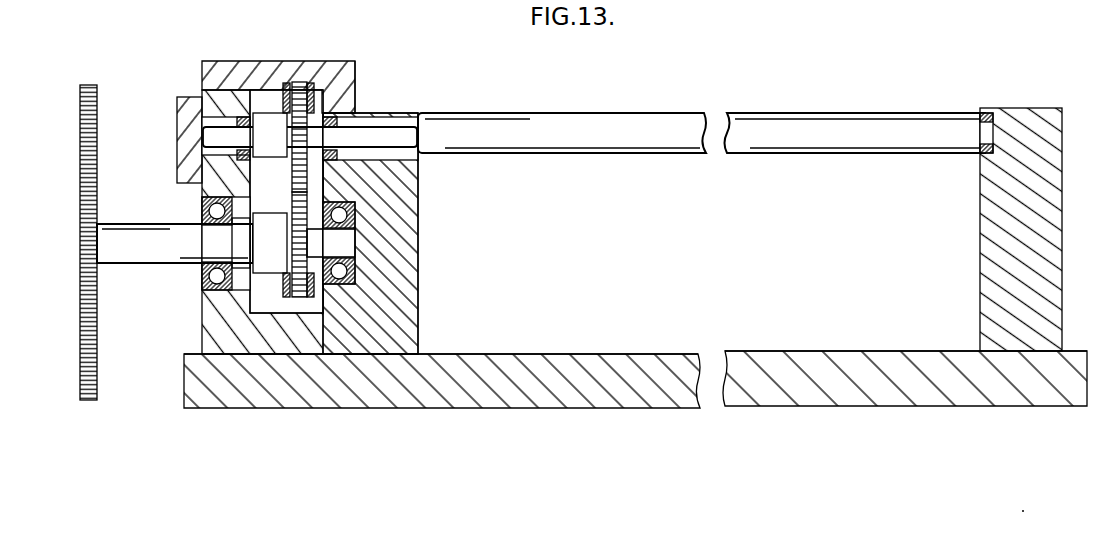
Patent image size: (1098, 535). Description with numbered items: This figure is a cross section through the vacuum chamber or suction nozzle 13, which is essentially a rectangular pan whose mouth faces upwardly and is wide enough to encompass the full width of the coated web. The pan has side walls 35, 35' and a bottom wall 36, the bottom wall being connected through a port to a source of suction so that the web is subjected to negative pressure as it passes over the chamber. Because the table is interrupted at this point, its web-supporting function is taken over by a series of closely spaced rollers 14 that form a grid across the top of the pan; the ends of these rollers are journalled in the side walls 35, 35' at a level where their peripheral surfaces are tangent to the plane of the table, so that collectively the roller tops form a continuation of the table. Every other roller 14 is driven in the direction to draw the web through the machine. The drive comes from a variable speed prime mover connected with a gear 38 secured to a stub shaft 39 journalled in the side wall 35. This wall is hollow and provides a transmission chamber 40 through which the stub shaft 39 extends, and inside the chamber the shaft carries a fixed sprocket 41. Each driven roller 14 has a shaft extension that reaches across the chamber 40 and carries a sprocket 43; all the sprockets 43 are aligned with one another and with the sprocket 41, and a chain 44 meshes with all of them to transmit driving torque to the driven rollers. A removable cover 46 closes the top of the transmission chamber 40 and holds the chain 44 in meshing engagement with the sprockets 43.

The vacuum chamber or suction nozzle 13 is at (482, 408).
The rollers 14 is at (590, 133).
The side wall 35 is at (411, 233).
The side wall 35' is at (981, 229).
The bottom wall 36 is at (613, 354).
The gear 38 is at (80, 160).
The stub shaft 39 is at (144, 224).
The transmission chamber 40 is at (260, 178).
The sprocket 41 is at (294, 246).
The sprocket 43 is at (294, 136).
The chain 44 is at (356, 97).
The removable cover 46 is at (278, 61).